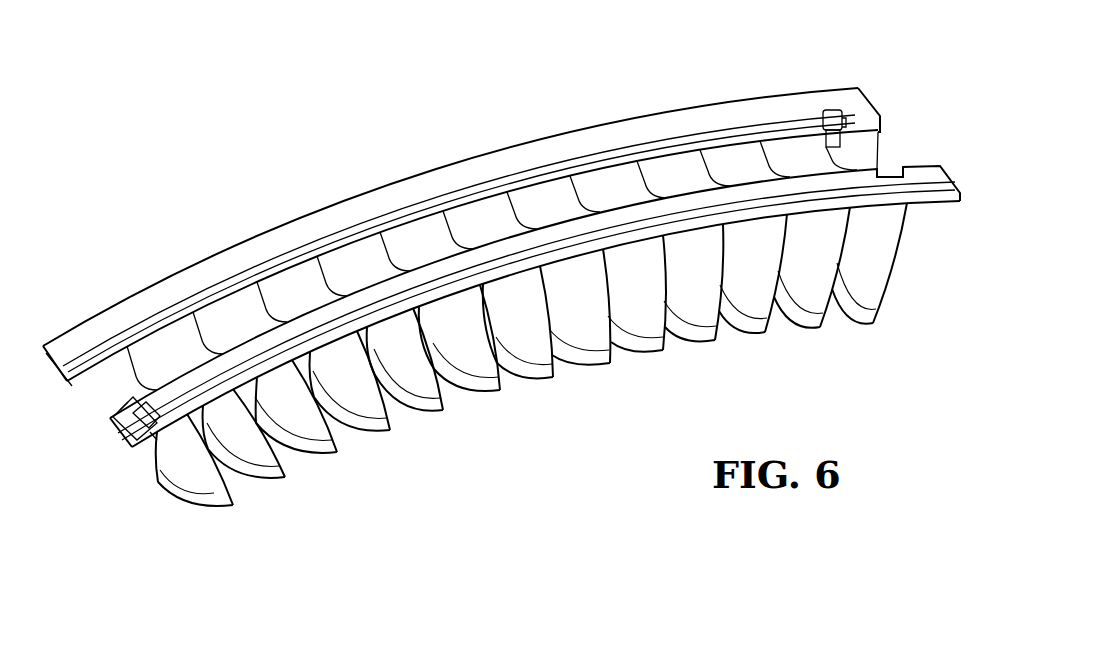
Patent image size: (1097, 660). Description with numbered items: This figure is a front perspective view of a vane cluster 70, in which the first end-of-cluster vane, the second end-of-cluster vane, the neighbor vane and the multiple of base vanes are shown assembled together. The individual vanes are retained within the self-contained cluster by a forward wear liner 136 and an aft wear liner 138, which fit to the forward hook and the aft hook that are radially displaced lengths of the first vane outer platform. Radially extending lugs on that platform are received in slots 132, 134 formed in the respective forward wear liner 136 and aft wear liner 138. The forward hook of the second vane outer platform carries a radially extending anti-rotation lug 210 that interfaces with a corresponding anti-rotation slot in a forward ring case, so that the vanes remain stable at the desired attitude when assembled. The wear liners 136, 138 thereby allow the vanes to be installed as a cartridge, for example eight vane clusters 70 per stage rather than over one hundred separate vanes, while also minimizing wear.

The vane cluster 70 is at (420, 121).
The aft wear liner 138 is at (608, 125).
The forward wear liner 136 is at (673, 214).
The slot 132 is at (831, 110).
The slot 134 is at (890, 172).
The anti-rotation lug 210 is at (152, 447).